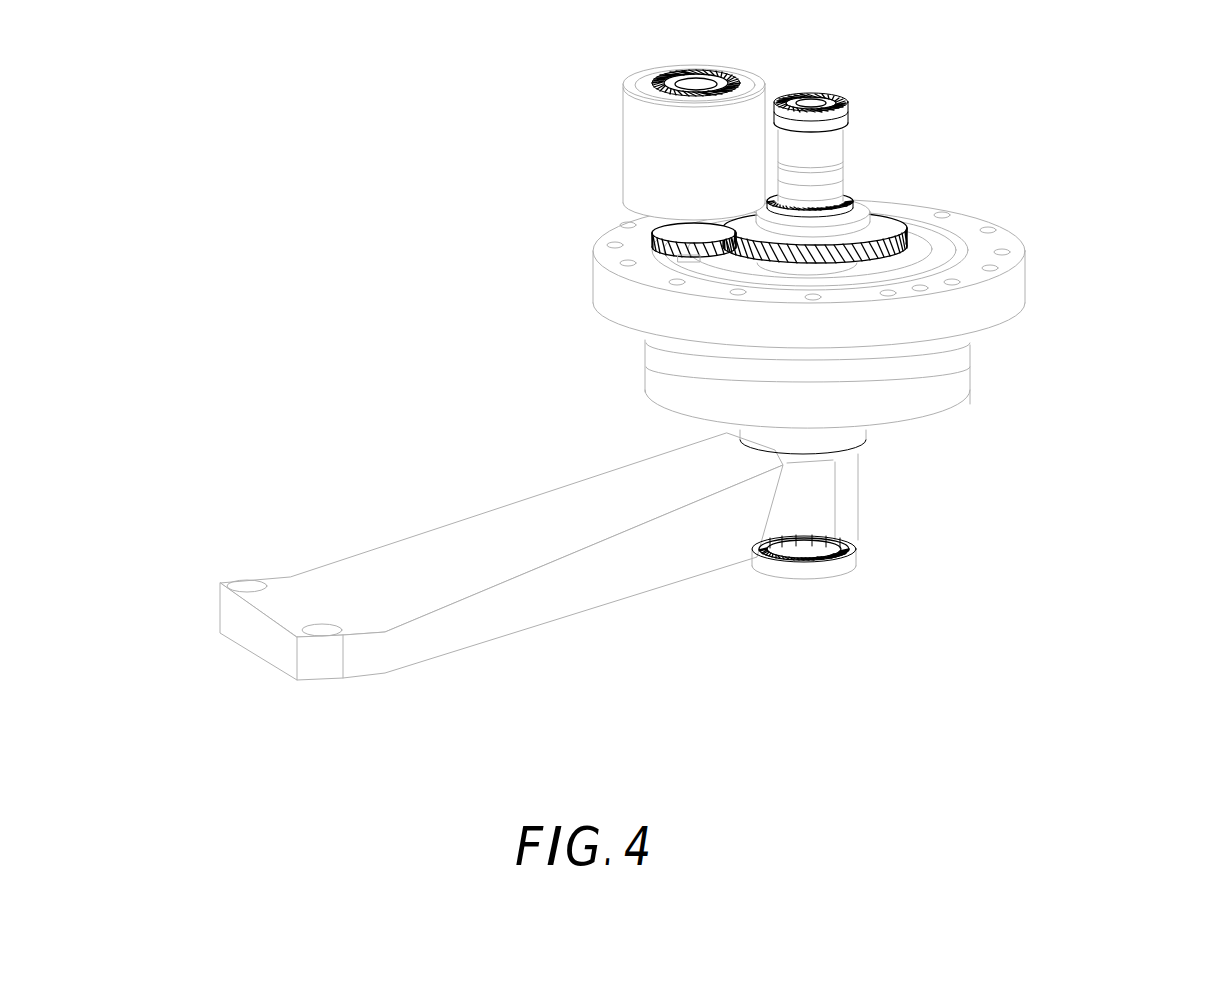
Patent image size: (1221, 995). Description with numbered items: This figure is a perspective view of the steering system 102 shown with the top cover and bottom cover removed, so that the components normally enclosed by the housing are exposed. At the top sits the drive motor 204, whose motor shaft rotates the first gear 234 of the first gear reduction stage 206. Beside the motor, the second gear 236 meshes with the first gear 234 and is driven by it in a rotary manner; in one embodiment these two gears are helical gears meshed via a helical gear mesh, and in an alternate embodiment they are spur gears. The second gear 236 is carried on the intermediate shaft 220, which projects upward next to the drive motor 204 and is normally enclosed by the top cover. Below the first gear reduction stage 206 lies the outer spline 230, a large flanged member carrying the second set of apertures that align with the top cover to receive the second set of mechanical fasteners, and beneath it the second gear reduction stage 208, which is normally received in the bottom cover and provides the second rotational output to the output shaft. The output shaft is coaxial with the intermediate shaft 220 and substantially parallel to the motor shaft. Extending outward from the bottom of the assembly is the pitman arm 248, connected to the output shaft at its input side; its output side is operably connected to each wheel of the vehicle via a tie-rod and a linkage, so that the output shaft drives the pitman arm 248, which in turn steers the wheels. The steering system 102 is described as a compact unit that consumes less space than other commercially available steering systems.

The steering system 102 is at (703, 354).
The drive motor 204 is at (640, 143).
The first gear reduction stage 206 is at (903, 151).
The second gear reduction stage 208 is at (865, 313).
The intermediate shaft 220 is at (837, 149).
The outer spline 230 is at (1002, 299).
The first gear 234 is at (657, 238).
The second gear 236 is at (898, 232).
The pitman arm 248 is at (603, 497).